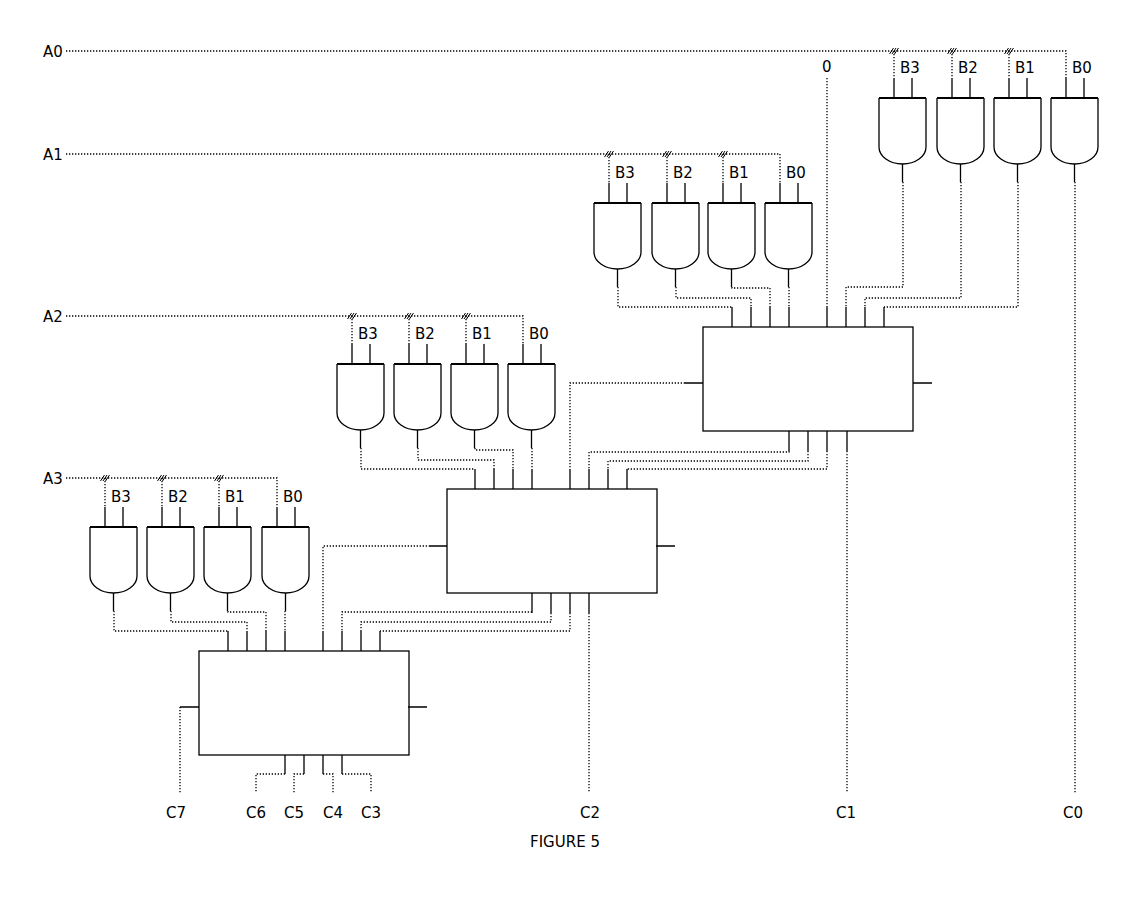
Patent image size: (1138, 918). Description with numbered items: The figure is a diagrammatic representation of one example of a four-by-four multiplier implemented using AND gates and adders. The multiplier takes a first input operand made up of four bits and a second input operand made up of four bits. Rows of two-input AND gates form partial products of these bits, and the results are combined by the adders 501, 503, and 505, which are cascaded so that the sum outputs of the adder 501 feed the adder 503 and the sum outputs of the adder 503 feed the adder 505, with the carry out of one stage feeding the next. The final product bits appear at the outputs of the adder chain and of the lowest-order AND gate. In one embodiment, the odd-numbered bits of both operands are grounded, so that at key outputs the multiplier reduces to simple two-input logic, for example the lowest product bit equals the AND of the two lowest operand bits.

The adder 501 is at (814, 379).
The adder 503 is at (558, 541).
The adder 505 is at (309, 702).